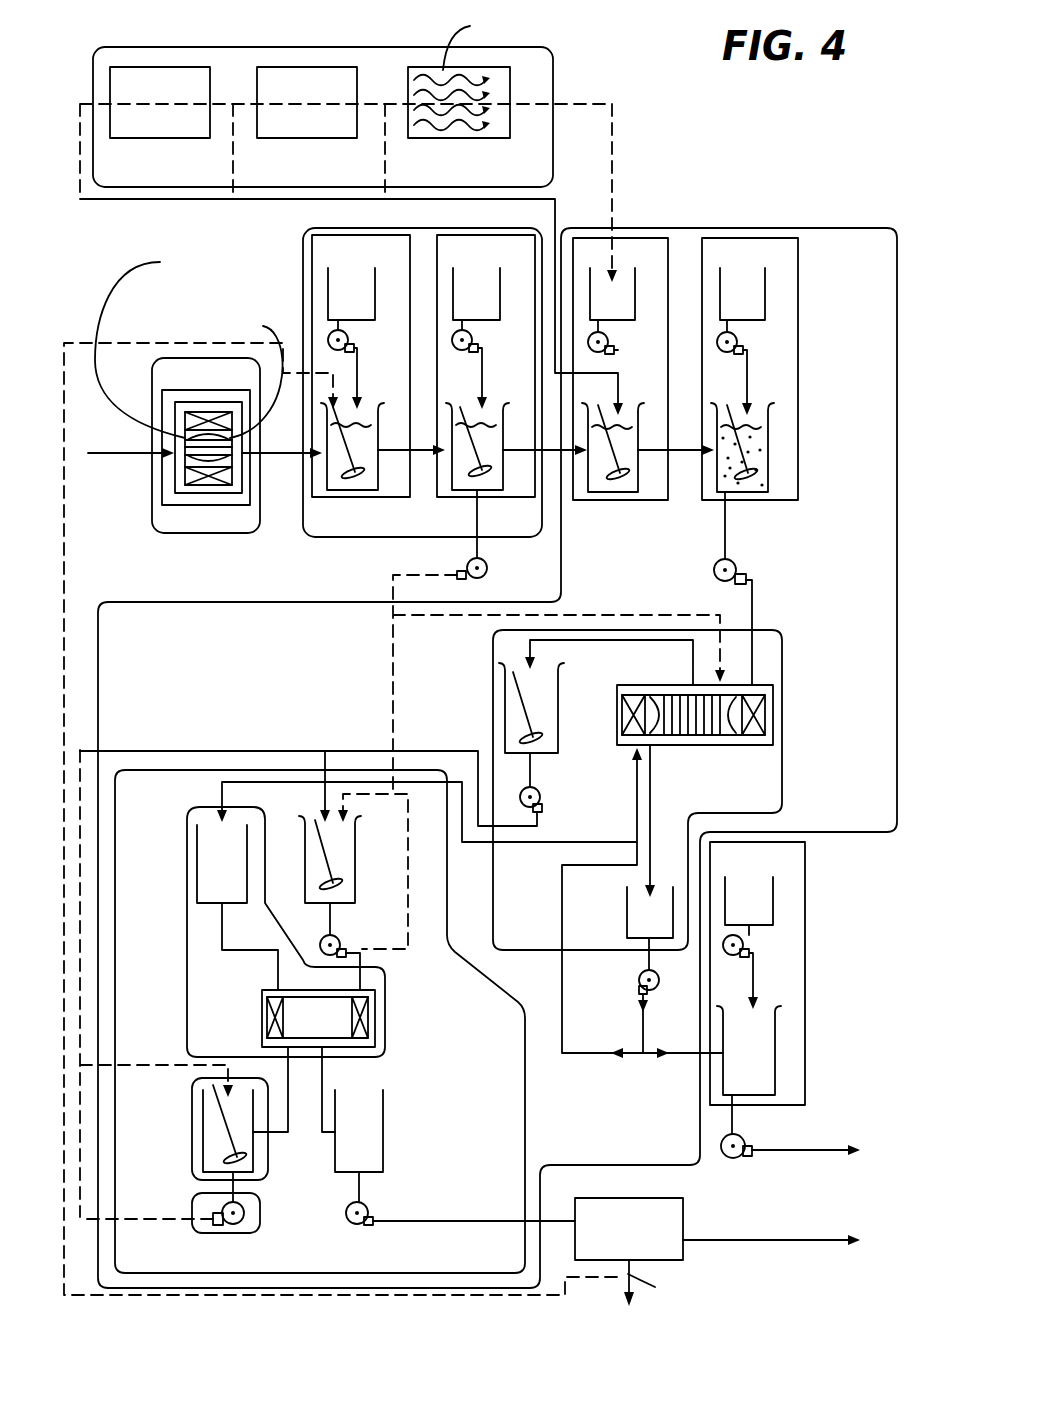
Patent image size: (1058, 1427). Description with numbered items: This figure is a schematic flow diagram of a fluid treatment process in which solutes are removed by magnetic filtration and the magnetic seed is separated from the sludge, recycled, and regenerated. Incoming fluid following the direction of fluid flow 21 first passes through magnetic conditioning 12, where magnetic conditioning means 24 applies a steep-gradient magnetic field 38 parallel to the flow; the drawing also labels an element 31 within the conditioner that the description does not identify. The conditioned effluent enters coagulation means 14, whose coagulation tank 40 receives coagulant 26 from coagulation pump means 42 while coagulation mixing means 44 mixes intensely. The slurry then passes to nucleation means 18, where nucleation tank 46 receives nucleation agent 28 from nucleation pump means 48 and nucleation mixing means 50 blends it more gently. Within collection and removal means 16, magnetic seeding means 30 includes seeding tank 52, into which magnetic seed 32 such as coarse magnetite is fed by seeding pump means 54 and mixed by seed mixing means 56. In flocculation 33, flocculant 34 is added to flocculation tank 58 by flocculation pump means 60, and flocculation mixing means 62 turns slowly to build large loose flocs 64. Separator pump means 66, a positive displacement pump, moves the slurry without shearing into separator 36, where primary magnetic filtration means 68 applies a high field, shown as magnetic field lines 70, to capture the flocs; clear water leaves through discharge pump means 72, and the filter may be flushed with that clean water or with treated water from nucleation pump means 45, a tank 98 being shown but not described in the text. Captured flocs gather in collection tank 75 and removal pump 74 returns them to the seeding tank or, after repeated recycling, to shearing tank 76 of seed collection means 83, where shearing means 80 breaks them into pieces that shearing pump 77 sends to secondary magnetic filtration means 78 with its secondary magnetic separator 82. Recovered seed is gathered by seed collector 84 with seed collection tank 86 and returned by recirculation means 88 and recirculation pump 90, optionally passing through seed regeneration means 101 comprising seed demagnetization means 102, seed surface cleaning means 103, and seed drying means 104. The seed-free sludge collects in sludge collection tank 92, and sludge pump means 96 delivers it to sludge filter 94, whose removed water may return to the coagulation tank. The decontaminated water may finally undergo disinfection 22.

The seed regeneration means 101 is at (340, 47).
The seed demagnetization means 102 is at (212, 86).
The seed surface cleaning means 103 is at (357, 86).
The seed drying means 104 is at (510, 86).
The magnetic conditioning 12 is at (155, 360).
The coagulation means 14 is at (305, 232).
The collection and removal means 16 is at (710, 228).
The nucleation means 18 is at (500, 228).
The direction of fluid flow 21 is at (132, 452).
The disinfection 22 is at (806, 960).
The magnetic conditioning means 24 is at (197, 390).
The coagulant 26 is at (362, 298).
The nucleation agent 28 is at (487, 298).
The magnetic seeding means 30 is at (635, 238).
The magnet 31 is at (212, 495).
The magnetic seed 32 is at (623, 298).
The flocculation 33 is at (757, 238).
The flocculant 34 is at (752, 298).
The separator 36 is at (782, 630).
The magnetic field 38 is at (189, 329).
The coagulation tank 40 is at (378, 460).
The coagulation pump means 42 is at (350, 336).
The coagulation mixing means 44 is at (357, 417).
The nucleation pump means 45 is at (487, 560).
The nucleation tank 46 is at (503, 432).
The nucleation pump means 48 is at (474, 336).
The nucleation mixing means 50 is at (458, 410).
The seeding tank 52 is at (638, 437).
The seeding pump means 54 is at (610, 338).
The seed mixing means 56 is at (603, 427).
The flocculation tank 58 is at (768, 457).
The flocculation pump means 60 is at (739, 338).
The flocculation mixing means 62 is at (728, 412).
The flocs 64 is at (762, 447).
The separator pump means 66 is at (715, 562).
The primary magnetic filtration means 68 is at (765, 748).
The magnetic field lines 70 is at (722, 708).
The discharge pump means 72 is at (639, 980).
The removal pump 74 is at (538, 788).
The collection tank 75 is at (552, 677).
The shearing tank 76 is at (305, 833).
The shearing pump 77 is at (336, 936).
The secondary magnetic filtration means 78 is at (386, 988).
The shearing means 80 is at (327, 862).
The secondary magnetic separator 82 is at (262, 1012).
The seed collection means 83 is at (526, 1092).
The seed collector 84 is at (192, 1093).
The seed collection tank 86 is at (200, 1143).
The recirculation means 88 is at (197, 1227).
The recirculation pump 90 is at (215, 1213).
The sludge collection tank 92 is at (384, 1136).
The sludge filter 94 is at (637, 1198).
The sludge pump means 96 is at (367, 1203).
The flush tank 98 is at (195, 877).